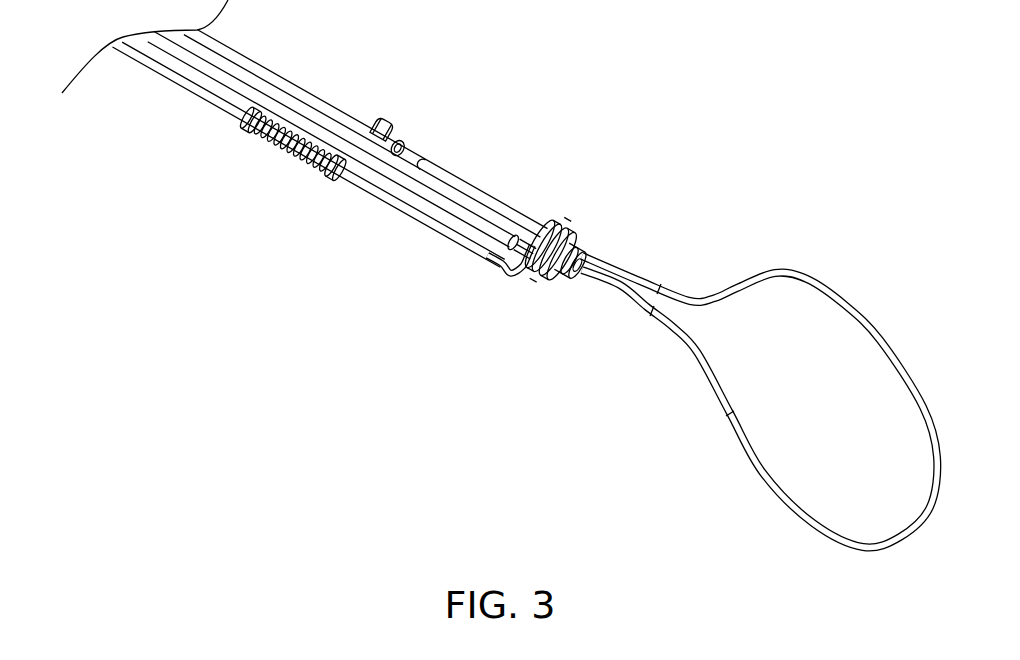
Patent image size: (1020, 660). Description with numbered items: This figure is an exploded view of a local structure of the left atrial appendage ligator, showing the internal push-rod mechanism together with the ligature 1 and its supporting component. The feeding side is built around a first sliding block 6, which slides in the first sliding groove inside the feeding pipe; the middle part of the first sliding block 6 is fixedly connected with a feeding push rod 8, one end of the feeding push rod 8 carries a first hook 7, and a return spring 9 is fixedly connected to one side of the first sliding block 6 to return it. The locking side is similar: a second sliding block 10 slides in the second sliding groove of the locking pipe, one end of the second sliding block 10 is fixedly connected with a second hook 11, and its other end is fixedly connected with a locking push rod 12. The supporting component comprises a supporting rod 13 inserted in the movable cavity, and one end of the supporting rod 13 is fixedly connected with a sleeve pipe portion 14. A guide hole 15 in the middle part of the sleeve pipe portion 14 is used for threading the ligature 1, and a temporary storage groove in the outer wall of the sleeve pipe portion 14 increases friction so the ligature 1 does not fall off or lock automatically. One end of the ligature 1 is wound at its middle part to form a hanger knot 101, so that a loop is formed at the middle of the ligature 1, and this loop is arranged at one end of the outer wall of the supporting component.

The ligature 1 is at (678, 333).
The hanger knot 101 is at (567, 235).
The first sliding block 6 is at (251, 124).
The first hook 7 is at (334, 176).
The feeding push rod 8 is at (213, 100).
The return spring 9 is at (301, 156).
The second sliding block 10 is at (383, 122).
The second hook 11 is at (406, 142).
The locking push rod 12 is at (224, 45).
The supporting rod 13 is at (274, 90).
The sleeve pipe portion 14 is at (516, 242).
The guide hole 15 is at (579, 280).